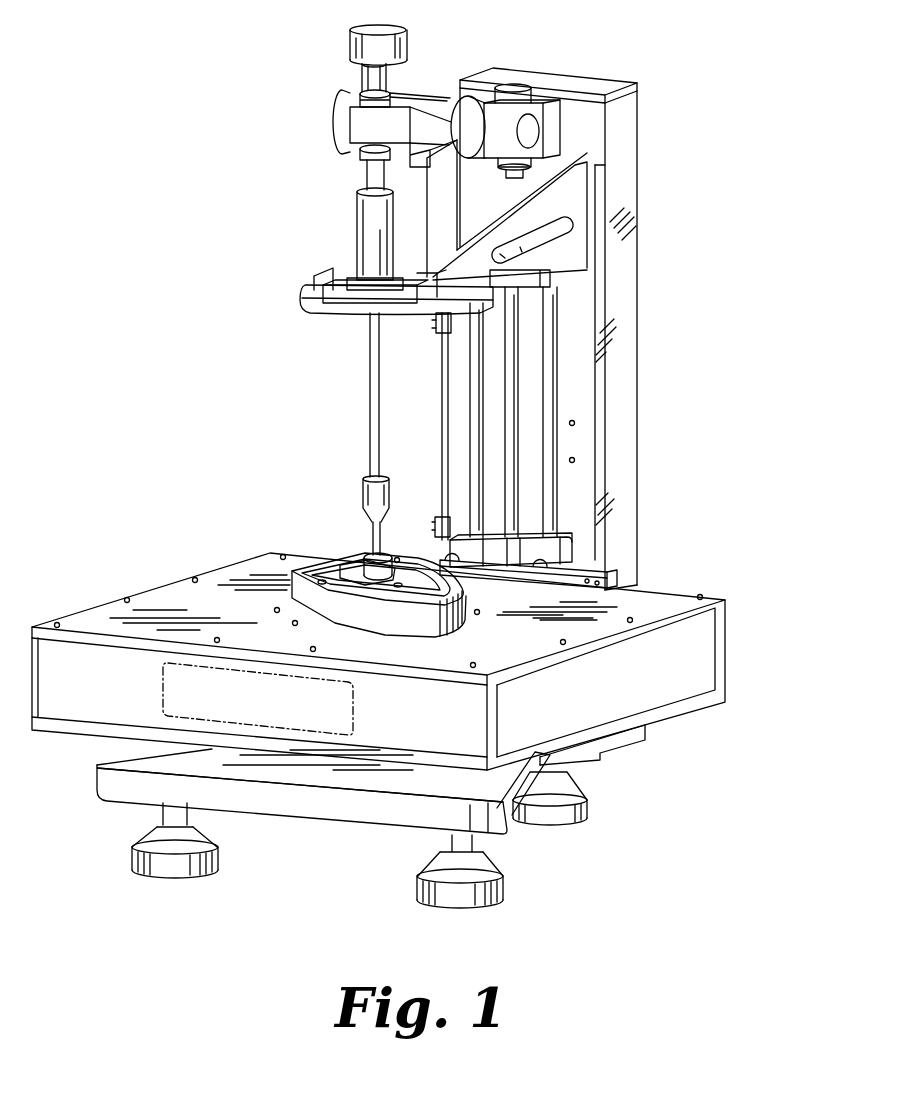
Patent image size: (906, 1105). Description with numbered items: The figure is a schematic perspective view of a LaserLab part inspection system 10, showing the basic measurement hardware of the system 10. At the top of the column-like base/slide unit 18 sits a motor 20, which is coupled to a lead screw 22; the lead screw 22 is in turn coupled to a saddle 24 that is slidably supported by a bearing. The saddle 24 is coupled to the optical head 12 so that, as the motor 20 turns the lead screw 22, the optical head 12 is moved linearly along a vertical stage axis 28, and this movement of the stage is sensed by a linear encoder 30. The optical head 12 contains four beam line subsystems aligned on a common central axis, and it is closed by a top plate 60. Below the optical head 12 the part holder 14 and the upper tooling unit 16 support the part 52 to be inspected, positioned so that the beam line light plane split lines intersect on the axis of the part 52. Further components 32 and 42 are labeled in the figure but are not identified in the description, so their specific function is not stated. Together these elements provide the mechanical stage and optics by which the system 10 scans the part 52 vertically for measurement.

The part inspection system 10 is at (665, 66).
The optical head 12 is at (420, 709).
The part holder 14 is at (418, 582).
The upper tooling unit 16 is at (373, 302).
The base/slide unit 18 is at (640, 300).
The motor 20 is at (535, 88).
The lead screw 22 is at (513, 423).
The saddle 24 is at (575, 558).
The vertical stage axis 28 is at (557, 168).
The linear encoder 30 is at (440, 483).
The probe shaft 32 is at (368, 377).
The sample fixture 42 is at (403, 557).
The part 52 is at (367, 543).
The top plate 60 is at (643, 605).